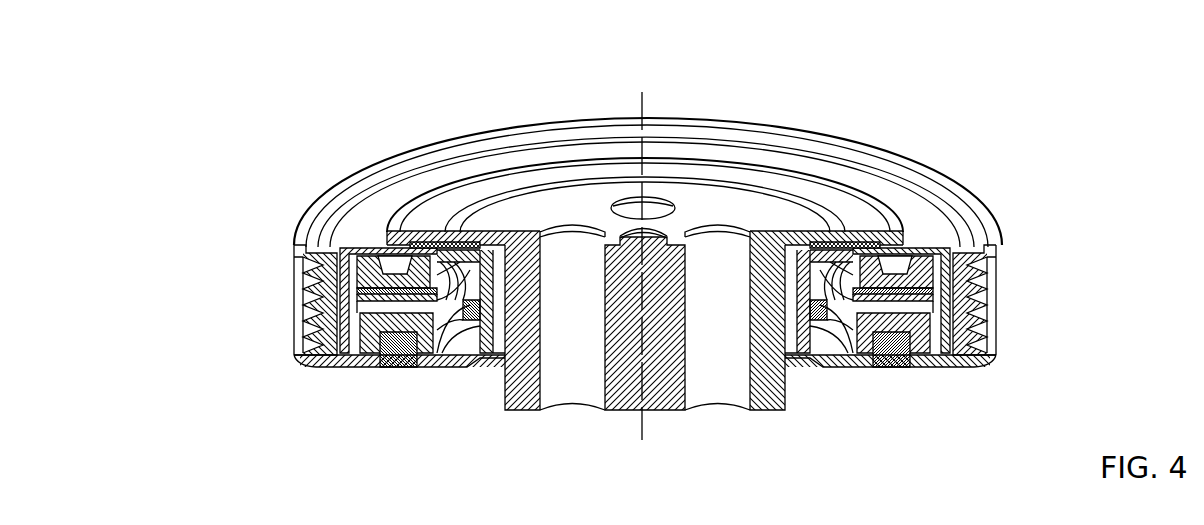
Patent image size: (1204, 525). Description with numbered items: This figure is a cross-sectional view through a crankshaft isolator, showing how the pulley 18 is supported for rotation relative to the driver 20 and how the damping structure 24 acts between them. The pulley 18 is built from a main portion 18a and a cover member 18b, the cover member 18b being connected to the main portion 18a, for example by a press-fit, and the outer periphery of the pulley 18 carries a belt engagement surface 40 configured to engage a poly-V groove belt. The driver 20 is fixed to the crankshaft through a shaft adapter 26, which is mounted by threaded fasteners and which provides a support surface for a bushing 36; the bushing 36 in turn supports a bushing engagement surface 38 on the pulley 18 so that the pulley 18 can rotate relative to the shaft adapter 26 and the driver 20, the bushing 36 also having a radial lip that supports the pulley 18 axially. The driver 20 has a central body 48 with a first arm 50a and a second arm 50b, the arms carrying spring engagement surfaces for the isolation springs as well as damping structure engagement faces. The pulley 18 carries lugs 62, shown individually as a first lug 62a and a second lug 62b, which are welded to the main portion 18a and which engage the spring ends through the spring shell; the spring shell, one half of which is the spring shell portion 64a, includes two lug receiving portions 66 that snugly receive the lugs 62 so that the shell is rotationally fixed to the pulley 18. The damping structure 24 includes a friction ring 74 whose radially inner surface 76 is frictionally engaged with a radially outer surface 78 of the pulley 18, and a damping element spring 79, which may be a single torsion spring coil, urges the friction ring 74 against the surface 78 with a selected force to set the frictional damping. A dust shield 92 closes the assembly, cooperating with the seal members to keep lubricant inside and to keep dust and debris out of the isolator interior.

The pulley 18 is at (1077, 146).
The main portion 18a is at (997, 246).
The cover member 18b is at (922, 215).
The driver 20 is at (700, 236).
The damping structure 24 is at (878, 232).
The shaft adapter 26 is at (615, 400).
The bushing 36 is at (795, 366).
The bushing engagement surface 38 is at (750, 268).
The belt engagement surface 40 is at (990, 285).
The central body 48 is at (512, 258).
The first arm 50a is at (920, 300).
The second arm 50b is at (388, 300).
The lugs 62 is at (645, 333).
The first lug 62a is at (897, 366).
The second lug 62b is at (393, 368).
The spring shell portion 64a is at (913, 325).
The lug receiving portions 66 is at (407, 368).
The friction ring 74 is at (800, 302).
The radially inner surface 76 is at (800, 310).
The radially outer surface 78 is at (768, 245).
The damping element spring 79 is at (840, 312).
The dust shield 92 is at (818, 171).